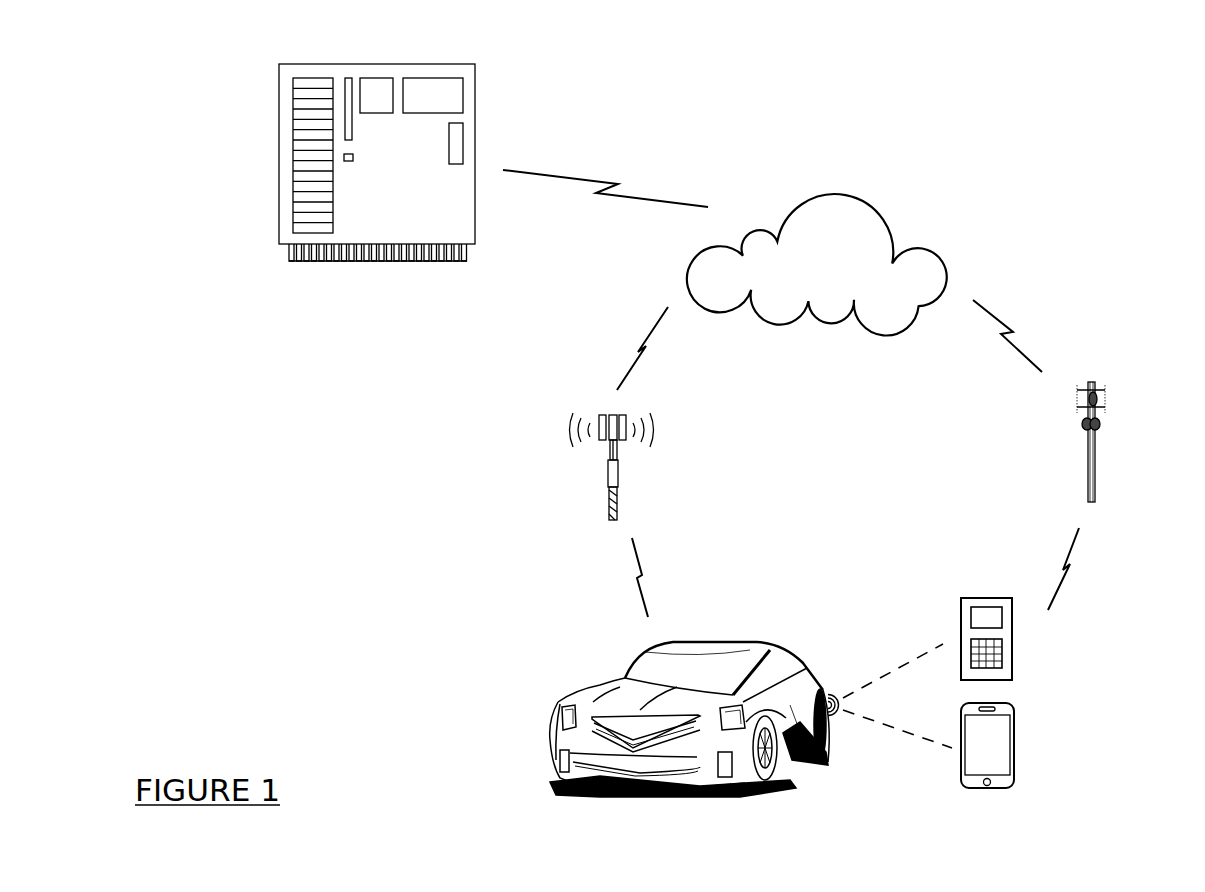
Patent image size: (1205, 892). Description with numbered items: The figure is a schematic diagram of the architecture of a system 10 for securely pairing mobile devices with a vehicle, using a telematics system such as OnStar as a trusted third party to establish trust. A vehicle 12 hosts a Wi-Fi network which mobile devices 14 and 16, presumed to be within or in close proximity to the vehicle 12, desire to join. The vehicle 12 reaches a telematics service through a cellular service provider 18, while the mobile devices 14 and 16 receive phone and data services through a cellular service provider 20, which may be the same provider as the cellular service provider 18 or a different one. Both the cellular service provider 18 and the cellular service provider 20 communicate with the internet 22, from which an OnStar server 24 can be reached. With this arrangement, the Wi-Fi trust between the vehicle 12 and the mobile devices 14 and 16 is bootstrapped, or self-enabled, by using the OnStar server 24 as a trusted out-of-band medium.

The system 10 is at (1068, 178).
The vehicle 12 is at (552, 718).
The mobile device 14 is at (961, 660).
The mobile device 16 is at (961, 767).
The cellular service provider 18 is at (602, 474).
The cellular service provider 20 is at (1095, 459).
The internet 22 is at (888, 215).
The OnStar server 24 is at (476, 99).